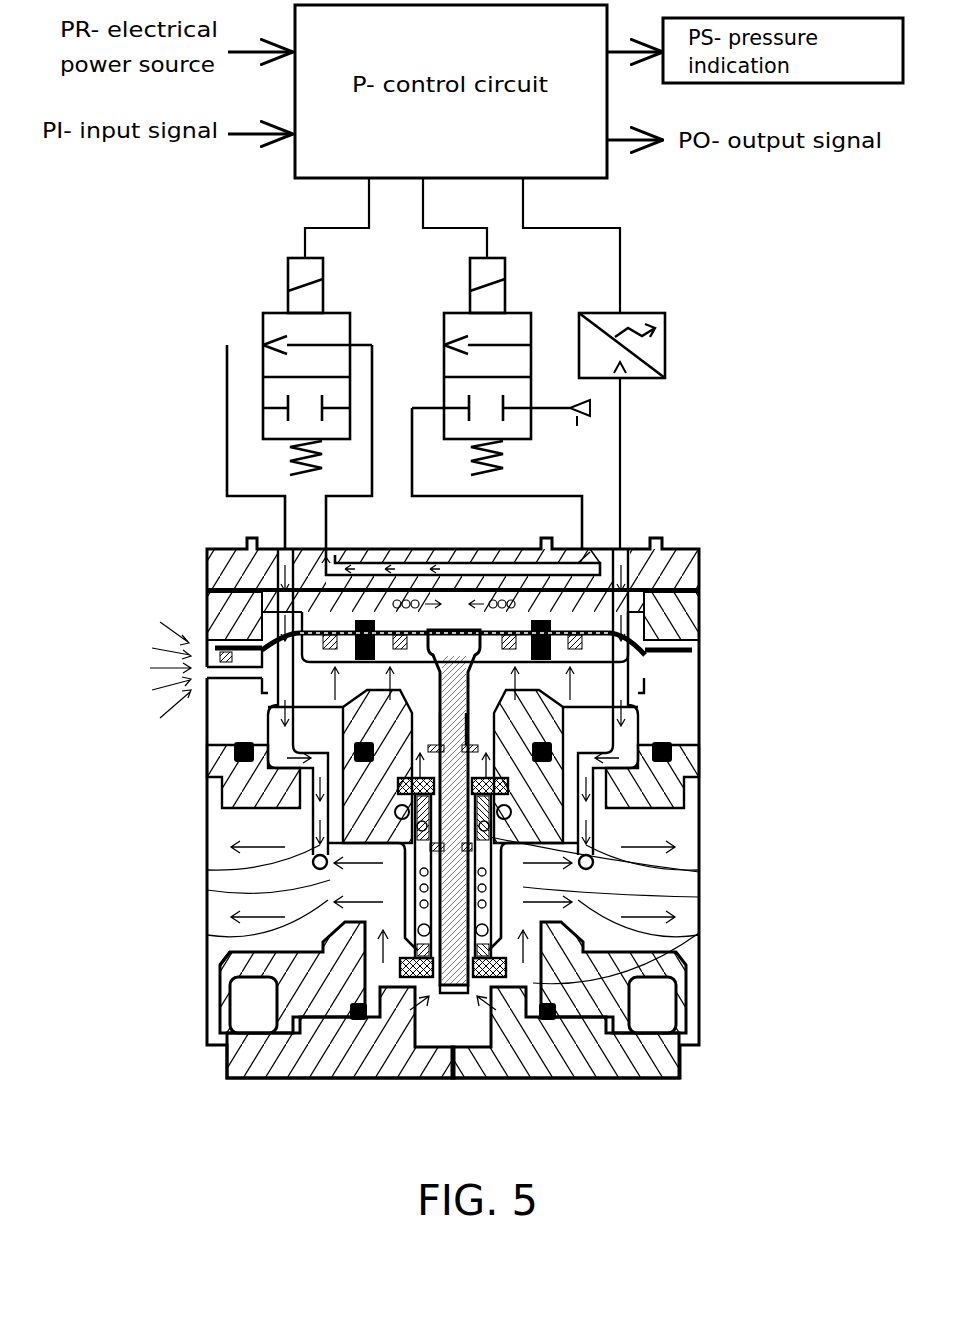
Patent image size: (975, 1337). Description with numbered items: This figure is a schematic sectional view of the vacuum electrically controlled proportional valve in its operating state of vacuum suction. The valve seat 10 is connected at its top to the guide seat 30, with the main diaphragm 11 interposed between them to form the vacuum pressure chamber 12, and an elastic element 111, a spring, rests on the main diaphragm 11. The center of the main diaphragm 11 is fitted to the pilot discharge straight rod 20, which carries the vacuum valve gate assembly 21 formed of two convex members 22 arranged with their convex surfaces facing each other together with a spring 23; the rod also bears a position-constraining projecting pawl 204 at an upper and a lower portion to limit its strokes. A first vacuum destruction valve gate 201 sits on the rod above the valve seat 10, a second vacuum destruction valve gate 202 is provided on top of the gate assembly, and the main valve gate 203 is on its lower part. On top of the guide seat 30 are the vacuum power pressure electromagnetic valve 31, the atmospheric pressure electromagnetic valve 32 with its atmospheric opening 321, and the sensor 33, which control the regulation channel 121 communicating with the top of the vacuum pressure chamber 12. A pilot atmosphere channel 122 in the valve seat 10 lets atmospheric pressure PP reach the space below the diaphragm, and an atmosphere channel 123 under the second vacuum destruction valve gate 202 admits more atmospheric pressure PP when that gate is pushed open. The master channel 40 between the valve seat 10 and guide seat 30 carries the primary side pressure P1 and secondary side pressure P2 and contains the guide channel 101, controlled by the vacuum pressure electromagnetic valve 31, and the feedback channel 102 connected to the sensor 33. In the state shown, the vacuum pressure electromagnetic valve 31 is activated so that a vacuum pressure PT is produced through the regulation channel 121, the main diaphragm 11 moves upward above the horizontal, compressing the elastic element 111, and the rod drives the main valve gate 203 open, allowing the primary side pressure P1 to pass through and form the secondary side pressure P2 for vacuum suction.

The valve seat 10 is at (703, 1020).
The main diaphragm 11 is at (648, 666).
The vacuum pressure chamber 12 is at (207, 594).
The pilot discharge straight rod 20 is at (425, 985).
The vacuum valve gate assembly 21 is at (505, 975).
The convex members 22 is at (490, 872).
The spring 23 is at (492, 890).
The guide seat 30 is at (703, 564).
The vacuum power pressure electromagnetic valve 31 is at (263, 325).
The atmospheric pressure electromagnetic valve 32 is at (444, 325).
The sensor 33 is at (665, 323).
The master channel 40 is at (213, 964).
The guide channel 101 is at (265, 790).
The feedback channel 102 is at (690, 790).
The elastic element 111 is at (278, 588).
The regulation channel 121 is at (612, 552).
The pilot atmosphere channel 122 is at (240, 668).
The atmosphere channel 123 is at (312, 862).
The first vacuum destruction valve gate 201 is at (235, 751).
The second vacuum destruction valve gate 202 is at (400, 788).
The main valve gate 203 is at (290, 1000).
The position-constraining projecting pawl 204 is at (515, 985).
The atmospheric opening 321 is at (579, 429).
The vacuum pressure PT is at (323, 562).
The atmospheric pressure PP is at (170, 672).
The primary side pressure P1 is at (250, 932).
The secondary side pressure P2 is at (630, 845).